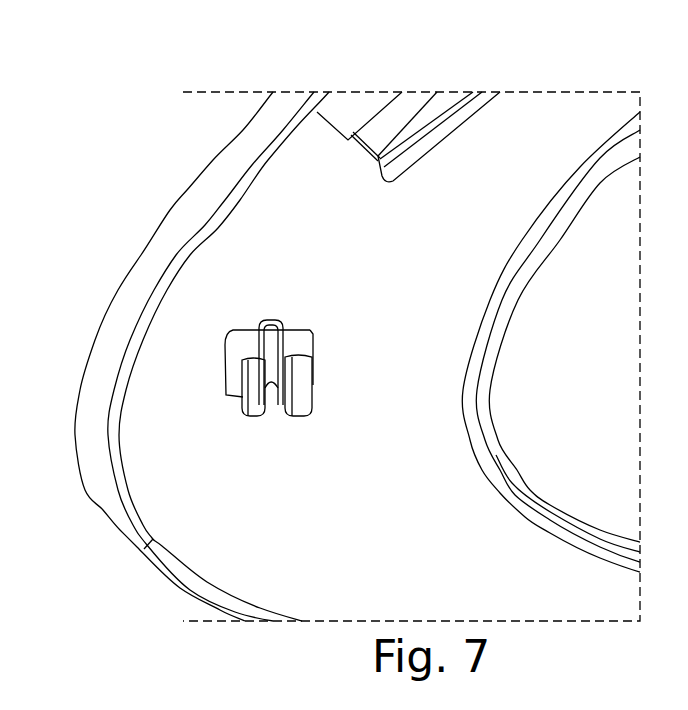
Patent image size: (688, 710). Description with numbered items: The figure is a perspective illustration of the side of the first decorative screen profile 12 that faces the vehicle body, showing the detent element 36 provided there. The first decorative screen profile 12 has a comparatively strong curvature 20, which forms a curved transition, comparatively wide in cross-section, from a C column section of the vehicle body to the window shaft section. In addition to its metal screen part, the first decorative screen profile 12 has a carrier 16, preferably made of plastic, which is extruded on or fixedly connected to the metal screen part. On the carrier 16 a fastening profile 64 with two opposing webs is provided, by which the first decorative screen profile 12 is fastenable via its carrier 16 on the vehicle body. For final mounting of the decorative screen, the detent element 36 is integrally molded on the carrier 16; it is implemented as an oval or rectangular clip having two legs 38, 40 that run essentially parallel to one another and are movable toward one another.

The first decorative screen profile 12 is at (260, 133).
The carrier 16 is at (508, 213).
The curvature 20 is at (520, 398).
The detent element 36 is at (181, 339).
The leg 38 is at (255, 360).
The leg 40 is at (296, 334).
The fastening profile 64 is at (353, 115).